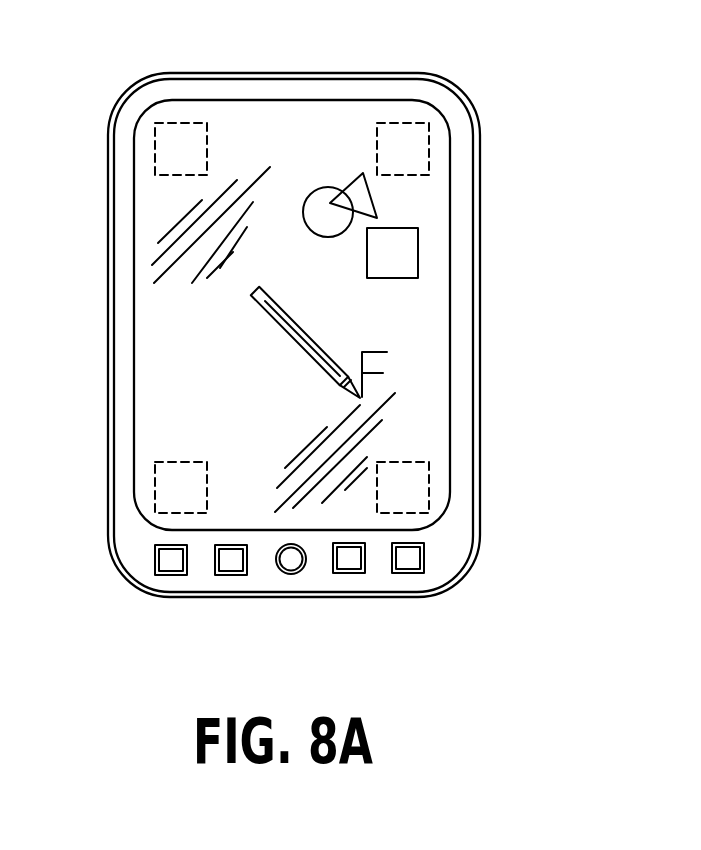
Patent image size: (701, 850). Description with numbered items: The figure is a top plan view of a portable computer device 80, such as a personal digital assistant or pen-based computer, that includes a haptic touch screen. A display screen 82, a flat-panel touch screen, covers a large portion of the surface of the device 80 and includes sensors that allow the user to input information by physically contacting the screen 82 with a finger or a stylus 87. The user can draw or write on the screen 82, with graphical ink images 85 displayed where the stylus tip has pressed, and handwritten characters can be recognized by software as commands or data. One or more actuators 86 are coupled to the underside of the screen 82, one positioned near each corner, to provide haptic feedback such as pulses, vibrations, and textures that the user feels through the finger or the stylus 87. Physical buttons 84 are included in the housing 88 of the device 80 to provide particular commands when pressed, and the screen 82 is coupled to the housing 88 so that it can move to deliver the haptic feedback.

The computer device 80 is at (574, 217).
The display screen 82 is at (289, 131).
The physical buttons 84 is at (231, 575).
The ink images 85 is at (374, 350).
The actuators 86 is at (165, 153).
The stylus 87 is at (262, 318).
The housing 88 is at (467, 308).